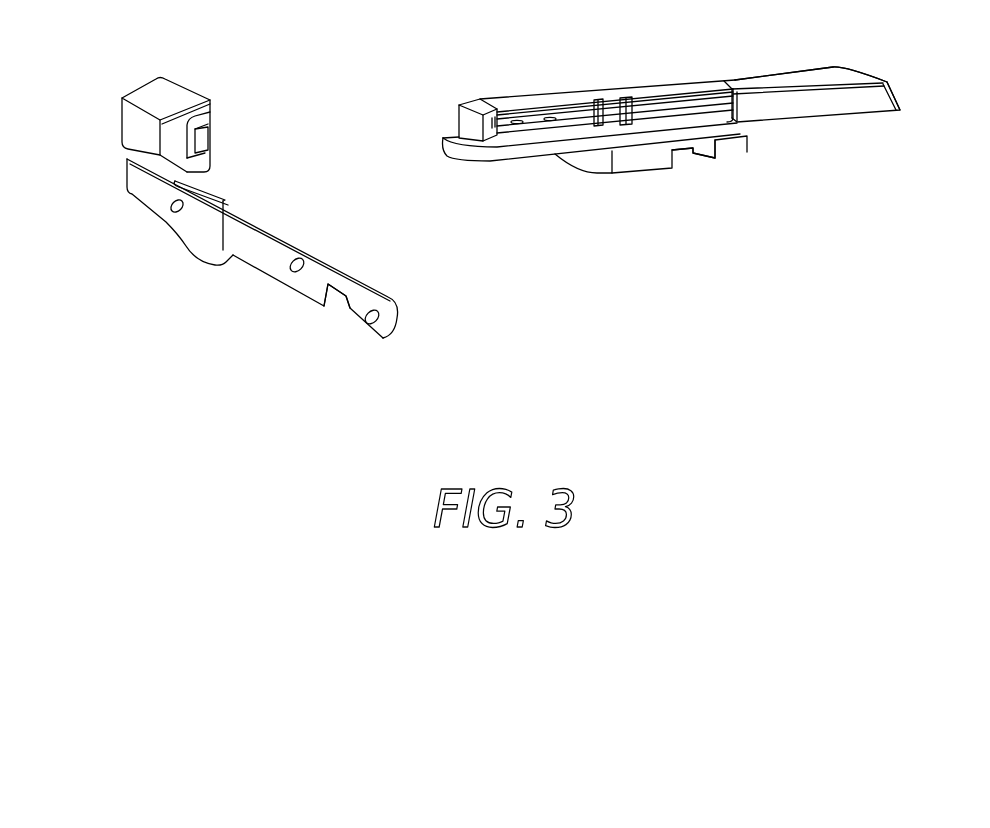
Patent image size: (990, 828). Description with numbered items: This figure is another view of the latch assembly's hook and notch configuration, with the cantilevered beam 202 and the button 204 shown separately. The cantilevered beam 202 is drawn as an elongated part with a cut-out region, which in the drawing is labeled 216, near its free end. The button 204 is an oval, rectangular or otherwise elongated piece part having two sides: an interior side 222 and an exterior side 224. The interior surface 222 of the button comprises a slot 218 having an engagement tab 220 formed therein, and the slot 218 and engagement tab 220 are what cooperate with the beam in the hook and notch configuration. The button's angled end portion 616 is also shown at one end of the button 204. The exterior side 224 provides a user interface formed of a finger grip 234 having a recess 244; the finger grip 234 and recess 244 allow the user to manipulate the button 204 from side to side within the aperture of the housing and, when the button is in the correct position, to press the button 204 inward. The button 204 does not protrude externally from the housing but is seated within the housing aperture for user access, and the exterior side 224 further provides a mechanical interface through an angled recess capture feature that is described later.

The cantilevered beam 202 is at (240, 289).
The notch 216 is at (341, 313).
The button 204 is at (797, 176).
The slot 218 is at (562, 112).
The engagement tab 220 is at (621, 104).
The interior surface 222 is at (747, 78).
The exterior side 224 is at (817, 124).
The angled end portion 616 is at (901, 100).
The finger grip 234 is at (641, 170).
The recess 244 is at (697, 159).